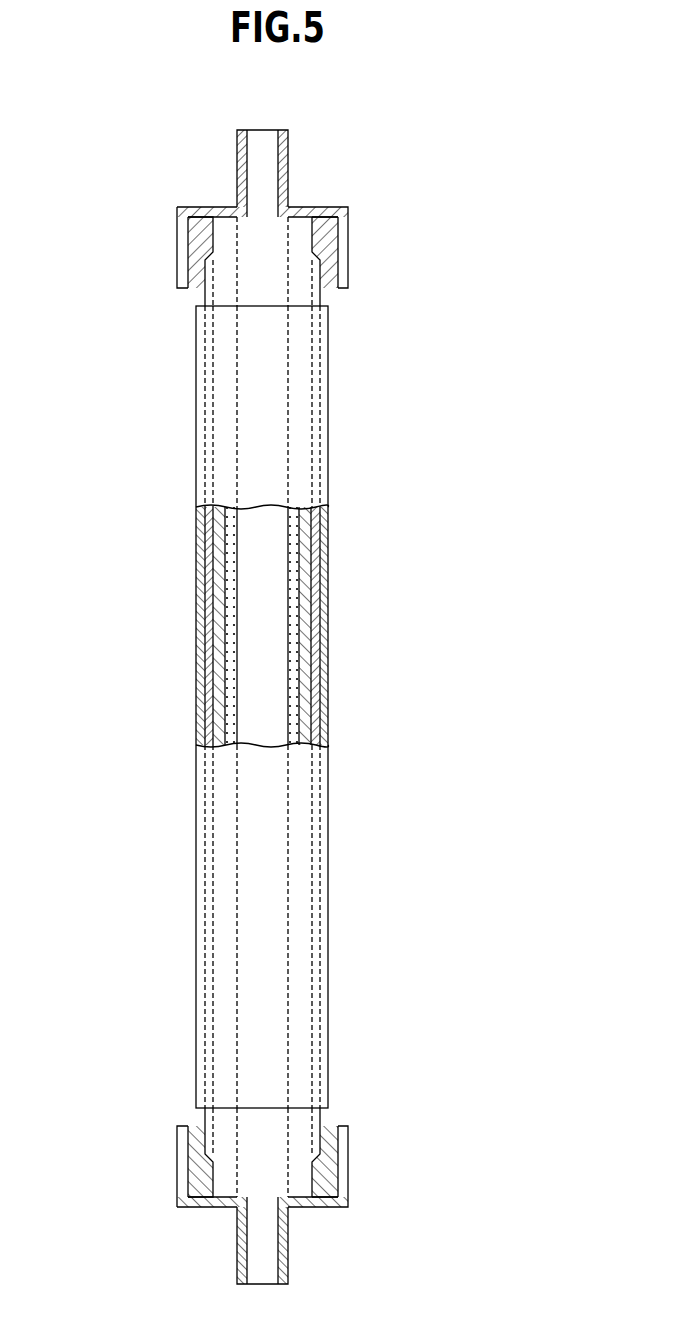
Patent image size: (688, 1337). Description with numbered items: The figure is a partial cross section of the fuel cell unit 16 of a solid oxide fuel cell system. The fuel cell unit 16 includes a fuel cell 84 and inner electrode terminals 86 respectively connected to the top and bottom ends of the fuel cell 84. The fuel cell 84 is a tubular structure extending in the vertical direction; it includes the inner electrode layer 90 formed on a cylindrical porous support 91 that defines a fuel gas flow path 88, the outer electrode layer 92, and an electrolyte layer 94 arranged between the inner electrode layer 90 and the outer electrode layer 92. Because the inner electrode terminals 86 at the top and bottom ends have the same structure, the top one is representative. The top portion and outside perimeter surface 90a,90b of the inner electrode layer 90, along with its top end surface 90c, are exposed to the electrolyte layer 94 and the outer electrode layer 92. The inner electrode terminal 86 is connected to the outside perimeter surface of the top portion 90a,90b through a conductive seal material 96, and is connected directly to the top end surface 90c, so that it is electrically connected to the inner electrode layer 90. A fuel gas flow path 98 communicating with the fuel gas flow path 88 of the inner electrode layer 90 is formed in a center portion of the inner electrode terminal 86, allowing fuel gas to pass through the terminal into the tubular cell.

The fuel cell unit 16 is at (414, 365).
The fuel cell 84 is at (330, 469).
The inner electrode terminal 86 is at (348, 221).
The fuel gas flow path 88 is at (280, 637).
The inner electrode layer 90 is at (328, 537).
The top portion and outside perimeter surface of the inner electrode layer 90a,90b is at (346, 237).
The top end surface 90c is at (303, 210).
The cylindrical porous support 91 is at (318, 580).
The outer electrode layer 92 is at (328, 675).
The electrolyte layer 94 is at (303, 616).
The conductive seal material 96 is at (197, 242).
The fuel gas flow path 98 is at (260, 155).